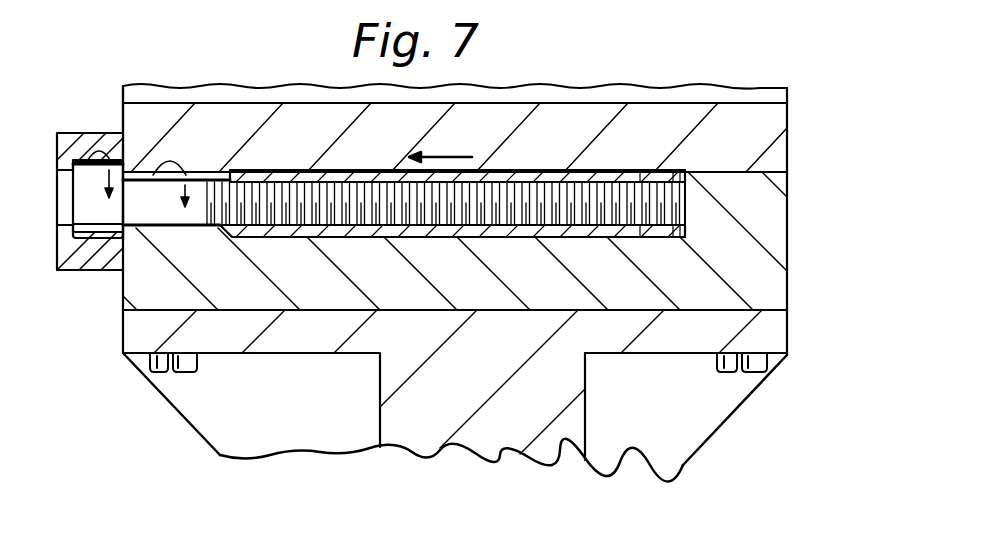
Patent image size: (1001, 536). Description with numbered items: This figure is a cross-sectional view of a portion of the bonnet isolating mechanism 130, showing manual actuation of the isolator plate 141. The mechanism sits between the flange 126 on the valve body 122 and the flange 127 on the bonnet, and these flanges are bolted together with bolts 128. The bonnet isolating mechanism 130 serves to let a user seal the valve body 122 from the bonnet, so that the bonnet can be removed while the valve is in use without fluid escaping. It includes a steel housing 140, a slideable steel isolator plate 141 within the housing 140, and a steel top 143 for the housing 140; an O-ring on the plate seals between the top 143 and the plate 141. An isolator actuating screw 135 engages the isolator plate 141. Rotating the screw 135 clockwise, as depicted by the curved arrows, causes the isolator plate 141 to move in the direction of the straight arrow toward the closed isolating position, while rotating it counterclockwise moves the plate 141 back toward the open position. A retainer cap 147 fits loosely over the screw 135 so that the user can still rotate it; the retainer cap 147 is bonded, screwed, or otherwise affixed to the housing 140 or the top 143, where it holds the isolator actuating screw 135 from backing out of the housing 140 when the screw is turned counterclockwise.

The valve body 122 is at (683, 465).
The flange 126 is at (124, 340).
The flange 127 is at (121, 86).
The bolts 128 is at (158, 372).
The bonnet isolating mechanism 130 is at (792, 118).
The isolator actuating screw 135 is at (72, 208).
The housing 140 is at (788, 297).
The isolator plate 141 is at (643, 237).
The top 143 is at (777, 162).
The retainer cap 147 is at (57, 133).